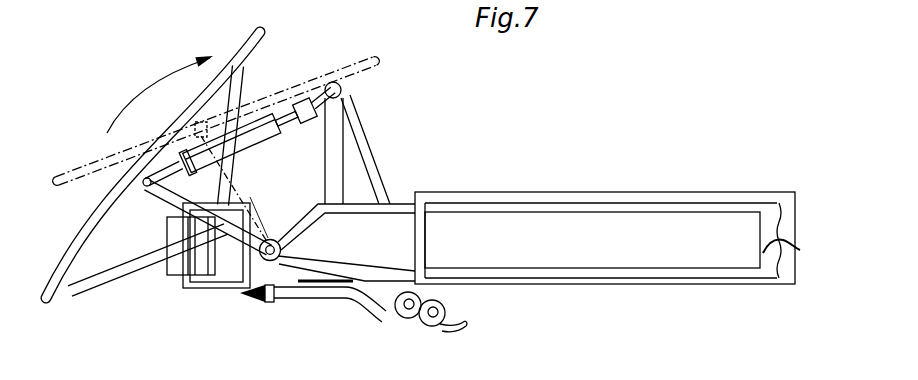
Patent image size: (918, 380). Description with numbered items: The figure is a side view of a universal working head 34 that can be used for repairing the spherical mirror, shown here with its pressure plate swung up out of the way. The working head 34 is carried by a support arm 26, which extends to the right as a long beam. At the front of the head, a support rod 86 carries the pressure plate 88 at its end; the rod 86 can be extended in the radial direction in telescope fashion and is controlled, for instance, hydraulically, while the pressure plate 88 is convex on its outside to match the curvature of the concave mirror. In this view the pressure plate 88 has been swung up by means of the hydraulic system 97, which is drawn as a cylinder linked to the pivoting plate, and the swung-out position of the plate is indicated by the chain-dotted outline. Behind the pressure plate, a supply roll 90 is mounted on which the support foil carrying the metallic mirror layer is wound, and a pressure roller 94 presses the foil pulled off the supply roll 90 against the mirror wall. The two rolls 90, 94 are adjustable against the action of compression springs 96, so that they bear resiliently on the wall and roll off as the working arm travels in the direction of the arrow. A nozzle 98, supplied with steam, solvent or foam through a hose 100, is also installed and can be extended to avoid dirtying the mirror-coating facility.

The support arm 26 is at (585, 192).
The universal working head 34 is at (380, 137).
The support rod 86 is at (397, 203).
The pressure plate 88 is at (143, 163).
The supply roll 90 is at (177, 262).
The pressure roller 94 is at (196, 265).
The compression springs 96 is at (272, 238).
The hydraulic system 97 is at (303, 93).
The nozzle 98 is at (263, 302).
The hose 100 is at (405, 320).